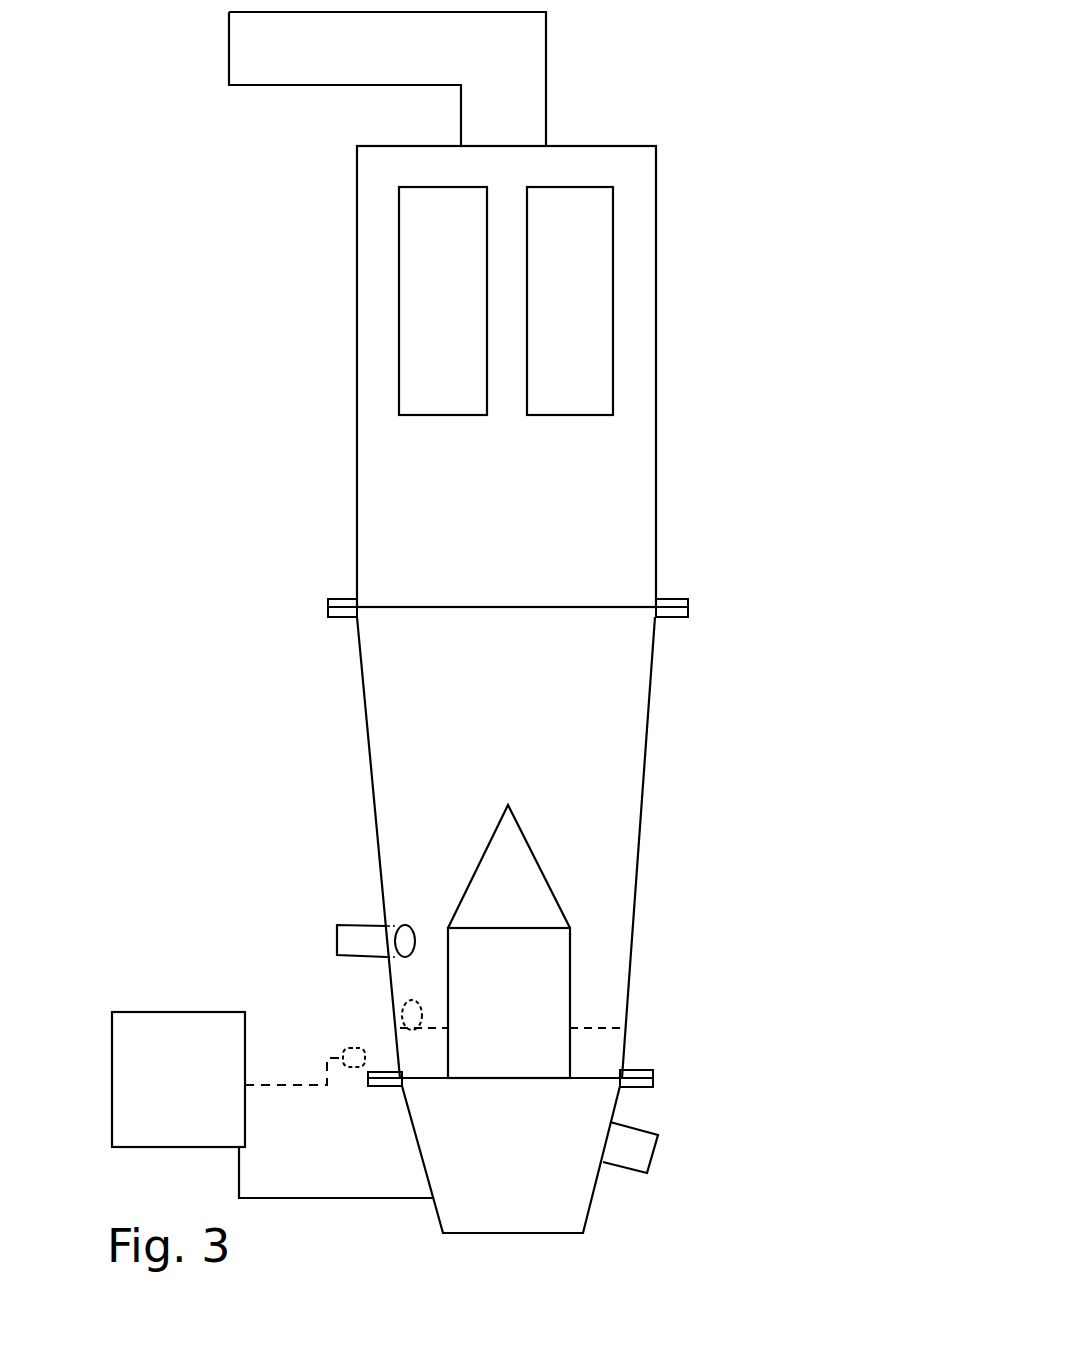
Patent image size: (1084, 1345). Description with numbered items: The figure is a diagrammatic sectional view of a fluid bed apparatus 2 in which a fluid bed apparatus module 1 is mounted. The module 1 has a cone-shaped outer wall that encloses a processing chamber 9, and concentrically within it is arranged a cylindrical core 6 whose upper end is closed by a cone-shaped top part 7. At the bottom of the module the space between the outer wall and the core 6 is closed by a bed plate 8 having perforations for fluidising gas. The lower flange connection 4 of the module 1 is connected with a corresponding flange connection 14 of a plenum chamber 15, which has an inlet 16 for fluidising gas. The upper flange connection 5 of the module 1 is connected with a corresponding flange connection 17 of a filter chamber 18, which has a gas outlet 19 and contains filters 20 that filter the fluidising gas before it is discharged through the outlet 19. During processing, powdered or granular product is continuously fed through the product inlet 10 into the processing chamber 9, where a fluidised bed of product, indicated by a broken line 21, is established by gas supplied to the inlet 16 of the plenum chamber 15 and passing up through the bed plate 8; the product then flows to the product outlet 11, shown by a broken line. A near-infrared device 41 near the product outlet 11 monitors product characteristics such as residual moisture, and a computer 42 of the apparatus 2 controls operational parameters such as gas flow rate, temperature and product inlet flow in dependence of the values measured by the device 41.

The fluid bed apparatus module 1 is at (383, 813).
The fluid bed apparatus 2 is at (799, 884).
The lower flange connection 4 is at (647, 1070).
The upper flange connection 5 is at (675, 612).
The cylindrical core 6 is at (530, 1003).
The cone-shaped top part 7 is at (527, 908).
The bed plate 8 is at (435, 1083).
The processing chamber 9 is at (615, 927).
The product inlet 10 is at (337, 935).
The product outlet 11 is at (400, 1003).
The flange connection 14 is at (650, 1088).
The plenum chamber 15 is at (520, 1172).
The inlet for fluidising gas 16 is at (647, 1150).
The flange connection 17 is at (670, 603).
The filter chamber 18 is at (540, 503).
The gas outlet 19 is at (395, 69).
The filters 20 is at (462, 321).
The fluidised bed of product 21 is at (600, 1025).
The near-infrared device 41 is at (348, 1067).
The computer 42 is at (220, 1103).